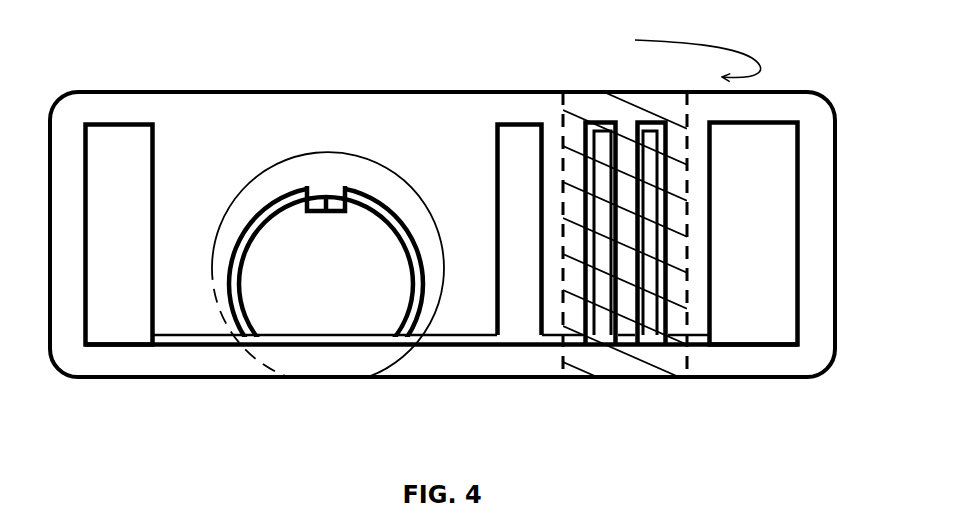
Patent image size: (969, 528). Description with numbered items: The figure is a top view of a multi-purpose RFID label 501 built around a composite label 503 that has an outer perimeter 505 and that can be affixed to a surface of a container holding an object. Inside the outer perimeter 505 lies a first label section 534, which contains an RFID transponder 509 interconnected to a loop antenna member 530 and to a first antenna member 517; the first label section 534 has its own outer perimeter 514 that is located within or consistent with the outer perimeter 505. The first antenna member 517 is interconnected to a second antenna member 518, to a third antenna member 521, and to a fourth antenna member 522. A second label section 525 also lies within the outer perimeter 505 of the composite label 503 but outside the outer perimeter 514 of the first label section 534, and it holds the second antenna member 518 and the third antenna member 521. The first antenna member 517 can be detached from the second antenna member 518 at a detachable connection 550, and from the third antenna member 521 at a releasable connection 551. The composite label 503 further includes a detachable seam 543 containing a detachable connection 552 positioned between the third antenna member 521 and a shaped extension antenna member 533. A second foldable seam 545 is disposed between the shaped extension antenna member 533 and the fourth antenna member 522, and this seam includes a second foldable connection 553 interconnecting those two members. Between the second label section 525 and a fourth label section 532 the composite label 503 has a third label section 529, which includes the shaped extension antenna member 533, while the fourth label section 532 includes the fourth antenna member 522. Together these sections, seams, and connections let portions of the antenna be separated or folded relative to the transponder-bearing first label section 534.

The multi-purpose RFID label 501 is at (351, 42).
The composite label 503 is at (718, 392).
The outer perimeter 505 is at (131, 91).
The RFID transponder 509 is at (326, 213).
The outer perimeter of first label section 514 is at (248, 181).
The first antenna member 517 is at (255, 346).
The second antenna member 518 is at (119, 235).
The third antenna member 521 is at (518, 149).
The fourth antenna member 522 is at (754, 234).
The second label section 525 is at (192, 109).
The third label section 529 is at (603, 109).
The loop antenna member 530 is at (343, 342).
The fourth label section 532 is at (812, 113).
The shaped extension antenna member 533 is at (625, 346).
The first label section 534 is at (291, 176).
The detachable seam 543 is at (562, 378).
The second foldable seam 545 is at (687, 378).
The detachable connection 550 is at (233, 338).
The releasable connection 551 is at (414, 343).
The detachable connection 552 is at (555, 341).
The second foldable connection 553 is at (686, 344).